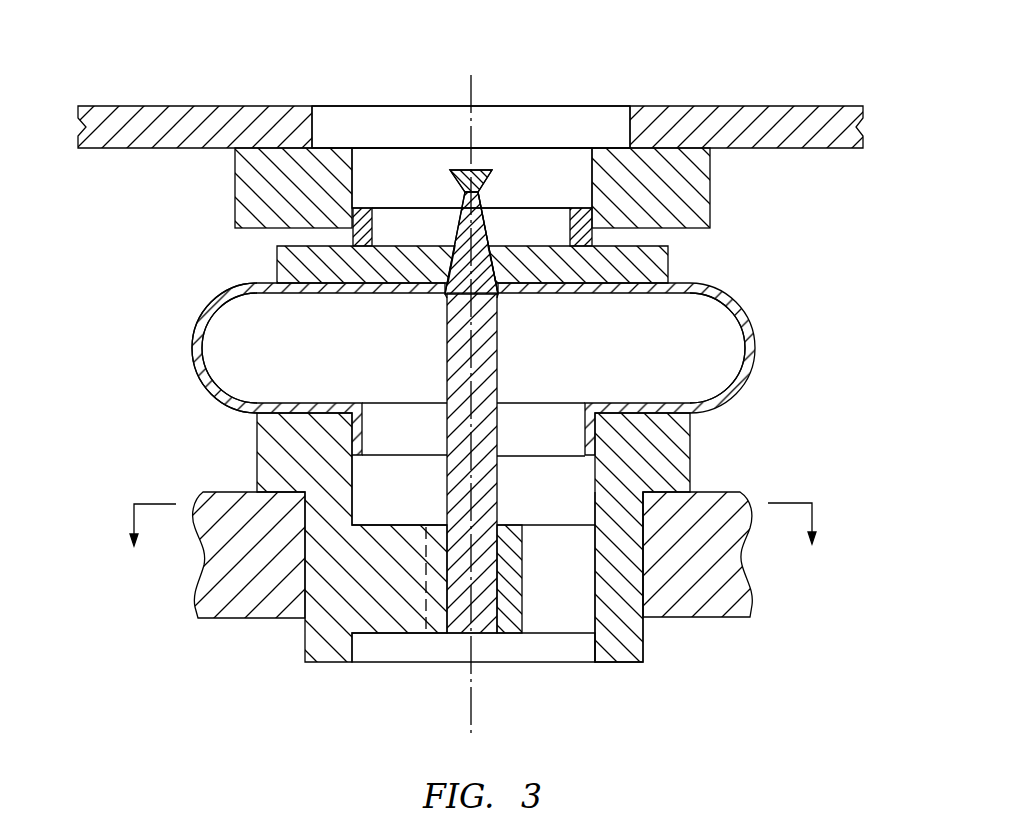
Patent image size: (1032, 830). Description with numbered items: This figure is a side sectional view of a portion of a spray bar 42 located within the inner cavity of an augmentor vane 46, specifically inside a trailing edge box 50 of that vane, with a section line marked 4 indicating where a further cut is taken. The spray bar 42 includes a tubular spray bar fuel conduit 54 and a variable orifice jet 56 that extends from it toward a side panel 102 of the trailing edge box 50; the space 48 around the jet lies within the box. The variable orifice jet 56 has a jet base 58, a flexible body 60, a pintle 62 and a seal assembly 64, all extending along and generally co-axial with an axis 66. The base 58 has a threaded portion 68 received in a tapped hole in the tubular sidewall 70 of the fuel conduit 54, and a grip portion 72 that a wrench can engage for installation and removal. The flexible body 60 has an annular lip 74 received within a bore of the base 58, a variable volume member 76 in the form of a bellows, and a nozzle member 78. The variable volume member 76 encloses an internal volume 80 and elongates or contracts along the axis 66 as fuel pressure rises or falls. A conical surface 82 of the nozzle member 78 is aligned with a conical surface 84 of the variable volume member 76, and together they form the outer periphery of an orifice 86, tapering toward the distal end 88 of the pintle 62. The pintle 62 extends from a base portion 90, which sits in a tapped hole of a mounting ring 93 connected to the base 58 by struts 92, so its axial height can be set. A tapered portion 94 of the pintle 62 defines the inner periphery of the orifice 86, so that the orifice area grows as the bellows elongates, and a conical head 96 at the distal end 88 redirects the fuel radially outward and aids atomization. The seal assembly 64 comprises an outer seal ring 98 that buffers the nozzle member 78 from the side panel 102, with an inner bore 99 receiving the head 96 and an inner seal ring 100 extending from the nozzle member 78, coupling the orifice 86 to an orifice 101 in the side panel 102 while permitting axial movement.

The spray bar 42 is at (435, 413).
The augmentor vane 46 is at (460, 148).
The gap space 48 is at (145, 456).
The trailing edge box 50 is at (788, 104).
The spray bar fuel conduit 54 is at (202, 627).
The variable orifice jet 56 is at (479, 442).
The jet base 58 is at (299, 647).
The flexible body 60 is at (731, 291).
The pintle 62 is at (508, 362).
The seal assembly 64 is at (221, 231).
The axis 66 is at (471, 718).
The threaded portion 68 is at (633, 632).
The tubular sidewall 70 is at (737, 595).
The grip portion 72 is at (677, 447).
The annular lip 74 is at (355, 457).
The variable volume member 76 is at (195, 367).
The nozzle member 78 is at (287, 268).
The internal volume 80 is at (288, 371).
The conical surface 82 is at (447, 293).
The conical surface 84 is at (498, 300).
The orifice 86 is at (490, 247).
The distal end 88 is at (460, 170).
The base portion 90 is at (500, 492).
The struts 92 is at (393, 637).
The mounting ring 93 is at (512, 577).
The tapered portion 94 is at (462, 227).
The conical head 96 is at (452, 184).
The outer seal ring 98 is at (712, 190).
The inner bore 99 is at (562, 190).
The inner seal ring 100 is at (592, 238).
The orifice 101 is at (340, 147).
The side panel 102 is at (98, 137).
The section line 4- 4 is at (473, 541).